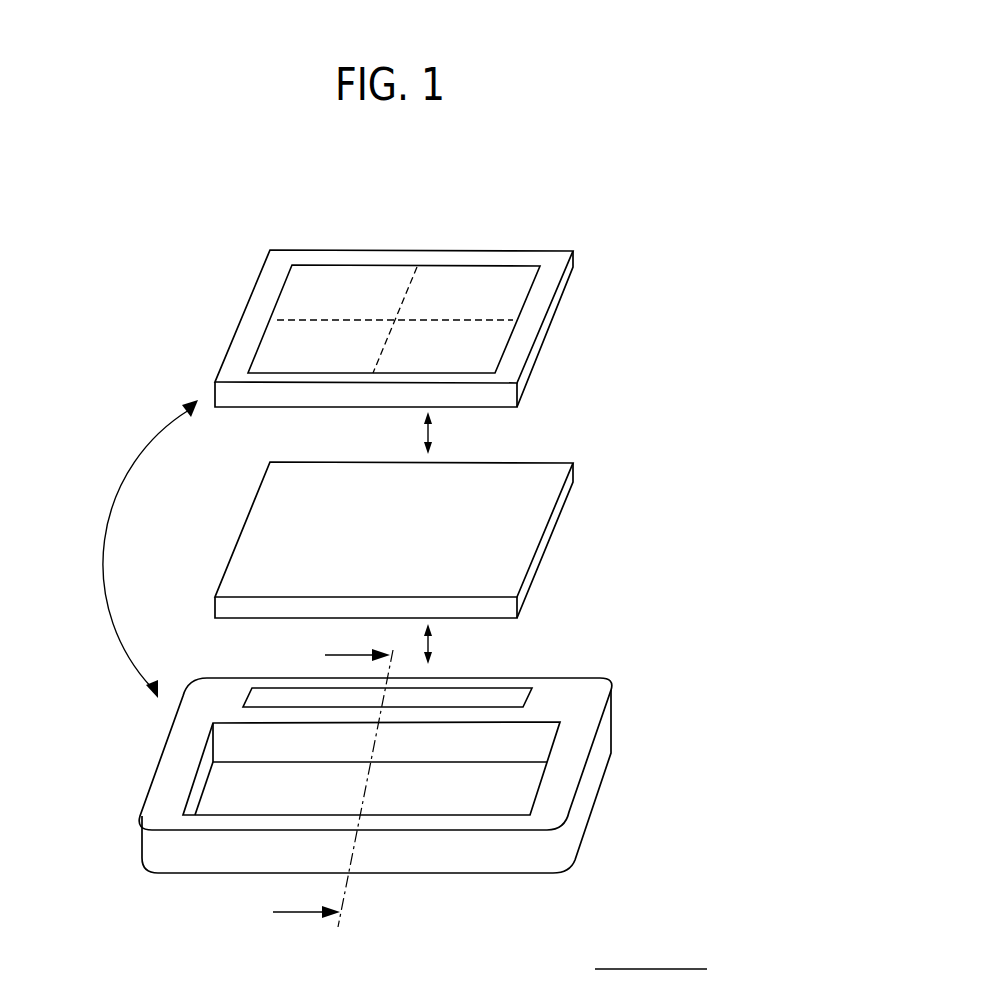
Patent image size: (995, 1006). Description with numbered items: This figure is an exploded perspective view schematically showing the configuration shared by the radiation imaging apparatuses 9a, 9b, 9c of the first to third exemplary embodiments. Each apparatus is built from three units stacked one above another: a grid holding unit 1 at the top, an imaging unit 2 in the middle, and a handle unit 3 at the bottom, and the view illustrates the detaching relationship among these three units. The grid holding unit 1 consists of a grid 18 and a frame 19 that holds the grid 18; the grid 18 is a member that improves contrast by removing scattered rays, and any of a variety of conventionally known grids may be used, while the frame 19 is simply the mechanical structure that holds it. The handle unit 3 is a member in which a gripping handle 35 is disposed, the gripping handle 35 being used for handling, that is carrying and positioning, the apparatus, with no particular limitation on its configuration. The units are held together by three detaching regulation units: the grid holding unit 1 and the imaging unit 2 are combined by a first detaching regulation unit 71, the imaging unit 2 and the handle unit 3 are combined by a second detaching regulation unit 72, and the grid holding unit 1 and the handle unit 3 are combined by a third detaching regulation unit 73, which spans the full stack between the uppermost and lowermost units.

The grid holding unit 1 is at (579, 224).
The imaging unit 2 is at (595, 523).
The handle unit 3 is at (622, 813).
The grid 18 is at (355, 282).
The frame 19 is at (553, 322).
The gripping handle 35 is at (520, 680).
The first detaching regulation unit 71 is at (449, 433).
The second detaching regulation unit 72 is at (449, 644).
The third detaching regulation unit 73 is at (128, 549).
The radiation imaging apparatus 9a is at (614, 954).
The radiation imaging apparatus 9b is at (656, 954).
The radiation imaging apparatus 9c is at (692, 954).